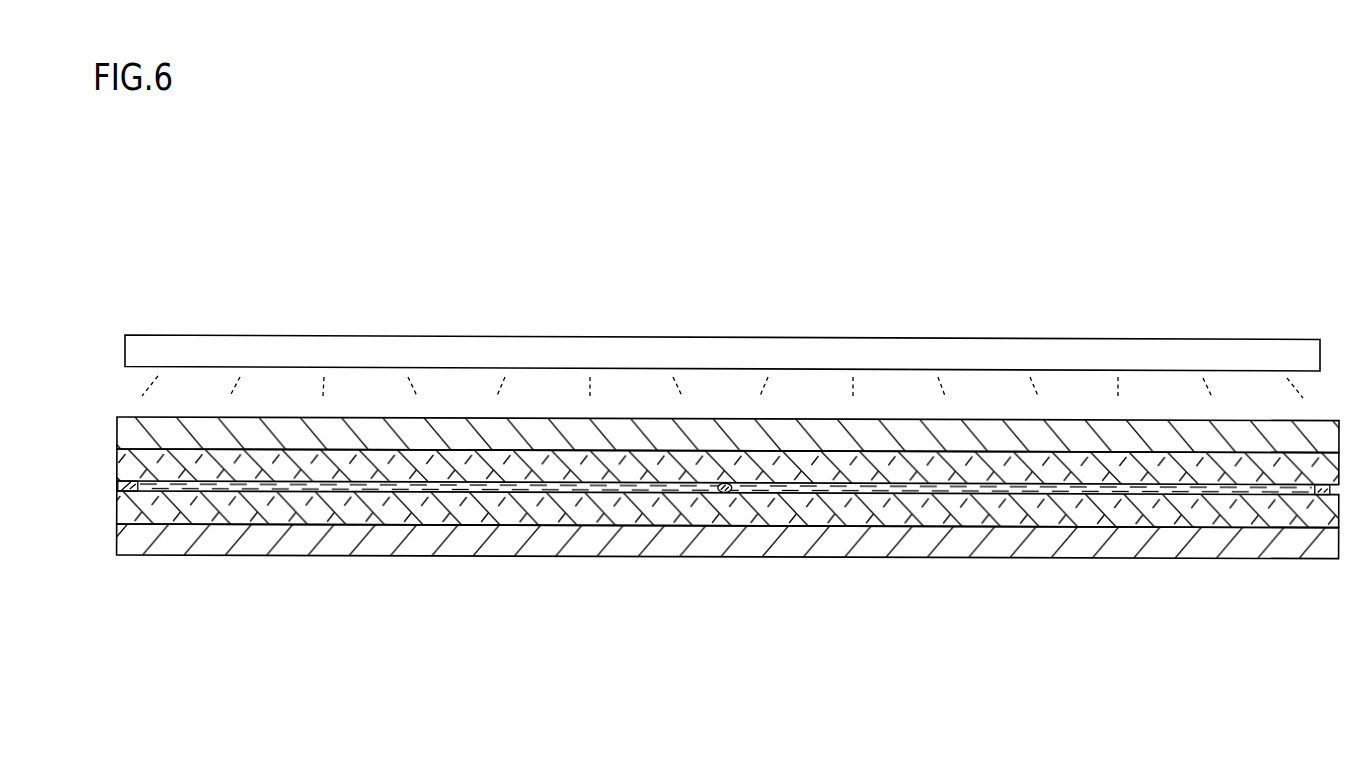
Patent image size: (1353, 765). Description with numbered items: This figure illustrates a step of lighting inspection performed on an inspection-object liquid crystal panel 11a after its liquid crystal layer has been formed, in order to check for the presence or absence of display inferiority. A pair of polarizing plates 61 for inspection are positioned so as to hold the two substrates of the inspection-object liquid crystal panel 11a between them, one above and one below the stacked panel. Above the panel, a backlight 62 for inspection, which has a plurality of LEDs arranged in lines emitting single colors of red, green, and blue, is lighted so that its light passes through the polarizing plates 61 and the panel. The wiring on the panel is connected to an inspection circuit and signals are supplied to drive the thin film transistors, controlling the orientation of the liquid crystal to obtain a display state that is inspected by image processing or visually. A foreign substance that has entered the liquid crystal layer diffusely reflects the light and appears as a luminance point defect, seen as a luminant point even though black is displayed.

The inspection-object liquid crystal panel 11a is at (110, 450).
The polarizing plate for inspection 61 is at (223, 537).
The backlight for inspection 62 is at (936, 352).